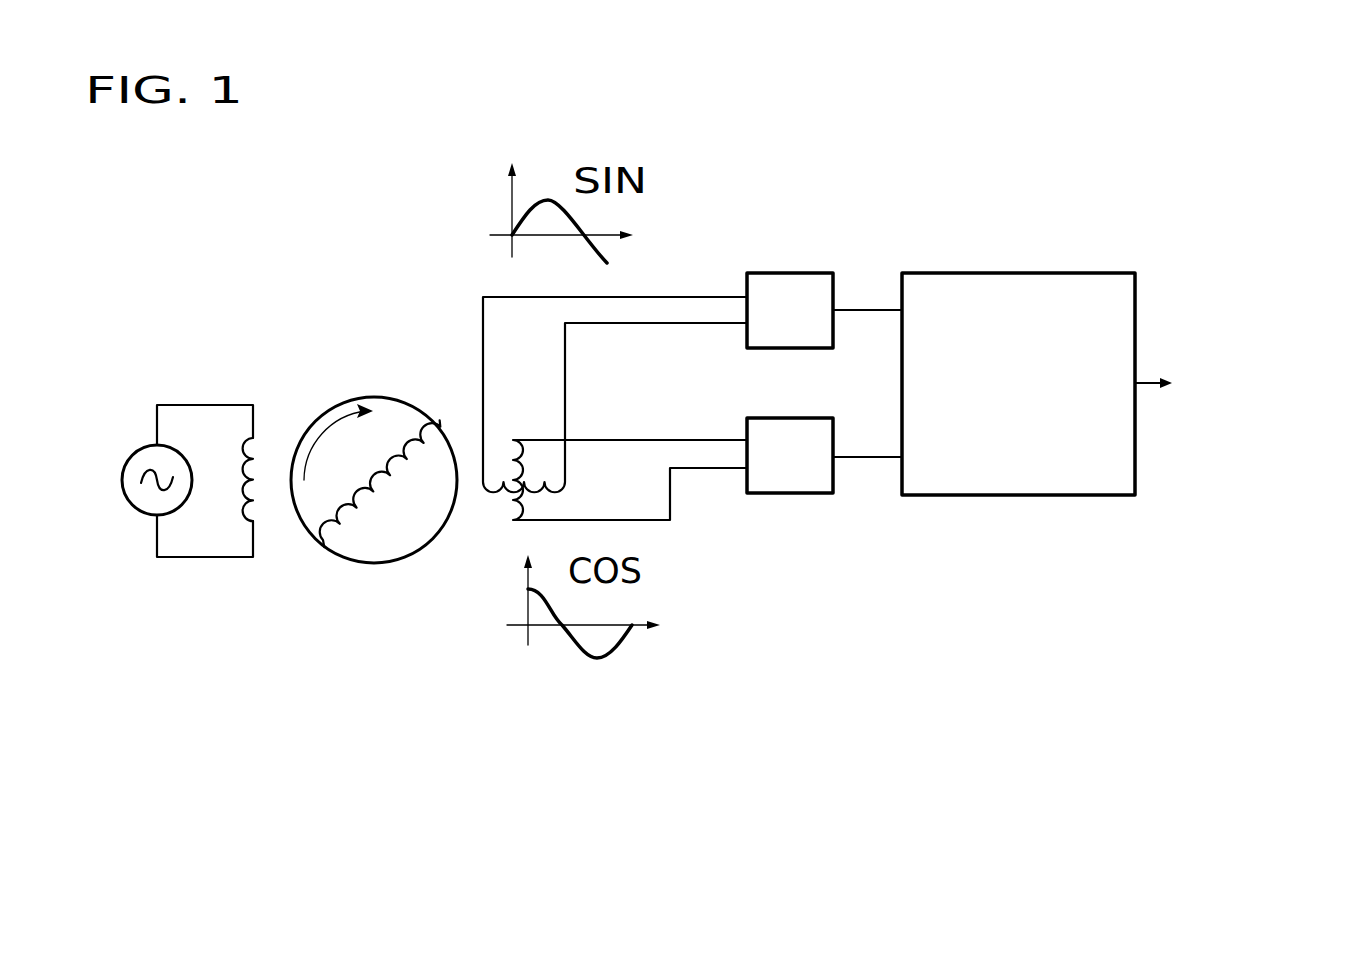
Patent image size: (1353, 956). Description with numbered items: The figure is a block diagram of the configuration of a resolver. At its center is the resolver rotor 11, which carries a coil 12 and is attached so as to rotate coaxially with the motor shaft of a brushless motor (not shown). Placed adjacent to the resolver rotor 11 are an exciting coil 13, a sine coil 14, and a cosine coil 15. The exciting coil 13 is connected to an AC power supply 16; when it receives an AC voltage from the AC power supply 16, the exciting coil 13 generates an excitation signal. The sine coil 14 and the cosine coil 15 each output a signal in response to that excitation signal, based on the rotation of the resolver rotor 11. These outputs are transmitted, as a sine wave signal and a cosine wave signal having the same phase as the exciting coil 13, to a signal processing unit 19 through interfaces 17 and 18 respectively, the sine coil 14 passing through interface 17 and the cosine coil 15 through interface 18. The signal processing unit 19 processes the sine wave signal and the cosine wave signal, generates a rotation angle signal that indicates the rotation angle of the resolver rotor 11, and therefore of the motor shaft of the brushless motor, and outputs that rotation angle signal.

The resolver rotor 11 is at (392, 398).
The coil 12 is at (347, 523).
The exciting coil 13 is at (254, 438).
The sine coil 14 is at (495, 492).
The cosine coil 15 is at (515, 440).
The AC power supply 16 is at (143, 447).
The interface 17 is at (775, 273).
The interface 18 is at (775, 418).
The signal processing unit 19 is at (1020, 273).